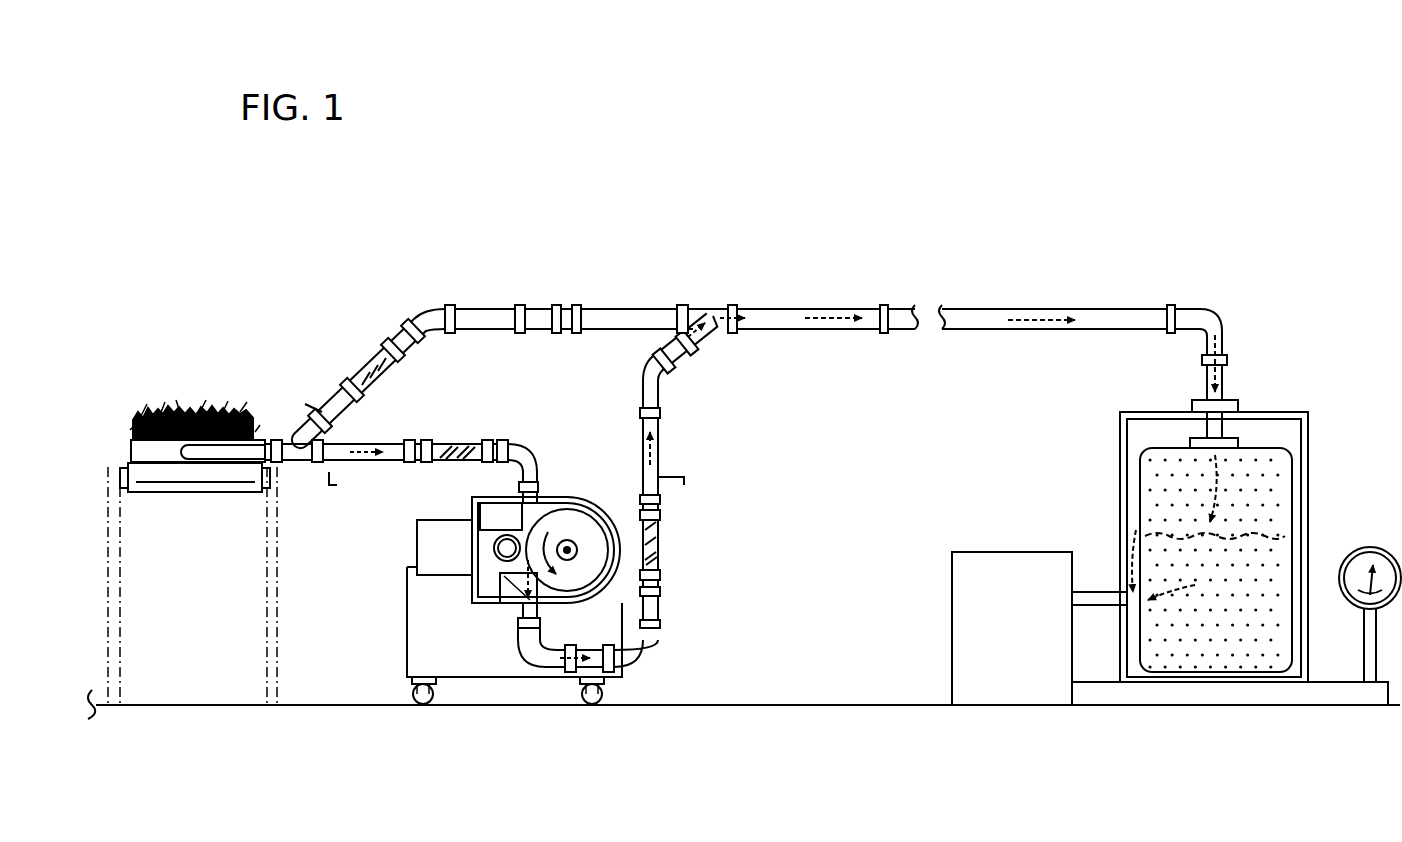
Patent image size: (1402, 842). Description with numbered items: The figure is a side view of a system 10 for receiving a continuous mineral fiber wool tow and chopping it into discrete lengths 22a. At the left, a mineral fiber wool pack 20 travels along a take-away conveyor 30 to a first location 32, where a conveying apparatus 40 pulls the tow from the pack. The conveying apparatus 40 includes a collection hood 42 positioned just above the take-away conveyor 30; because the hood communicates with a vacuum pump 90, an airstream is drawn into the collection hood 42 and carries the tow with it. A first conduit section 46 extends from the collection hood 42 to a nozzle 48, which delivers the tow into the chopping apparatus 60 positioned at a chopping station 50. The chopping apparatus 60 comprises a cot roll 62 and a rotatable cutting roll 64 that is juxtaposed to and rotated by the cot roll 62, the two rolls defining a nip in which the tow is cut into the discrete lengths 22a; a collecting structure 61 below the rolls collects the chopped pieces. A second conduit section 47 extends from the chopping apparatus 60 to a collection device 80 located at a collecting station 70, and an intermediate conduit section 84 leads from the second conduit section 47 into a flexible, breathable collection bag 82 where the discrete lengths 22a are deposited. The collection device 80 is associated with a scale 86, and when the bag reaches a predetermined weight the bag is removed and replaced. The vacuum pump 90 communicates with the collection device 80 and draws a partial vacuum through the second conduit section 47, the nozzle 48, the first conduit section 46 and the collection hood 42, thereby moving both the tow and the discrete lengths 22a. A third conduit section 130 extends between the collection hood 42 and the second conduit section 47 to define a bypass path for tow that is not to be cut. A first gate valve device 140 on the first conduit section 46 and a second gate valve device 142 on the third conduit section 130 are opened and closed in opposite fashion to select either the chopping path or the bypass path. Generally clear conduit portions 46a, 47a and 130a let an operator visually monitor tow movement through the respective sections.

The system 10 is at (868, 282).
The mineral fiber wool pack 20 is at (188, 508).
The discrete lengths 22a is at (1283, 576).
The take-away conveyor 30 is at (177, 478).
The first location 32 is at (196, 386).
The conveying apparatus 40 is at (520, 470).
The collection hood 42 is at (140, 452).
The first conduit section 46 is at (401, 436).
The clear conduit portion 46a is at (456, 452).
The second conduit section 47 is at (708, 470).
The clear conduit portion 47a is at (660, 551).
The nozzle 48 is at (522, 520).
The chopping station 50 is at (532, 555).
The chopping apparatus 60 is at (526, 535).
The collecting structure 61 is at (514, 590).
The cot roll 62 is at (594, 538).
The cutting roll 64 is at (500, 552).
The collecting station 70 is at (1260, 509).
The collection device 80 is at (1309, 468).
The collection bag 82 is at (1283, 550).
The intermediate conduit section 84 is at (1223, 428).
The scale 86 is at (1328, 684).
The vacuum pump 90 is at (955, 570).
The third conduit section 130 is at (632, 308).
The clear conduit portion 130a is at (398, 378).
The first gate valve device 140 is at (348, 477).
The second gate valve device 142 is at (320, 428).